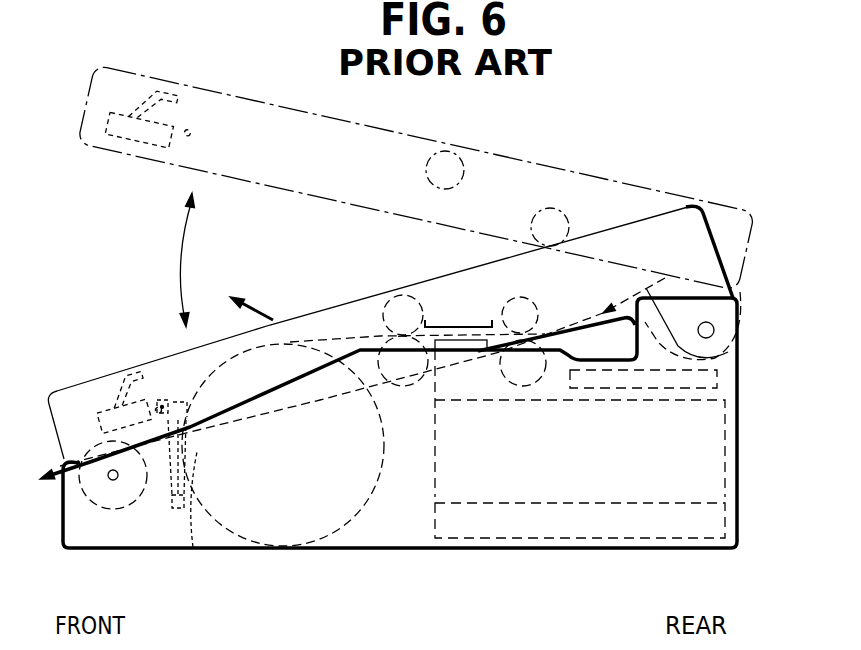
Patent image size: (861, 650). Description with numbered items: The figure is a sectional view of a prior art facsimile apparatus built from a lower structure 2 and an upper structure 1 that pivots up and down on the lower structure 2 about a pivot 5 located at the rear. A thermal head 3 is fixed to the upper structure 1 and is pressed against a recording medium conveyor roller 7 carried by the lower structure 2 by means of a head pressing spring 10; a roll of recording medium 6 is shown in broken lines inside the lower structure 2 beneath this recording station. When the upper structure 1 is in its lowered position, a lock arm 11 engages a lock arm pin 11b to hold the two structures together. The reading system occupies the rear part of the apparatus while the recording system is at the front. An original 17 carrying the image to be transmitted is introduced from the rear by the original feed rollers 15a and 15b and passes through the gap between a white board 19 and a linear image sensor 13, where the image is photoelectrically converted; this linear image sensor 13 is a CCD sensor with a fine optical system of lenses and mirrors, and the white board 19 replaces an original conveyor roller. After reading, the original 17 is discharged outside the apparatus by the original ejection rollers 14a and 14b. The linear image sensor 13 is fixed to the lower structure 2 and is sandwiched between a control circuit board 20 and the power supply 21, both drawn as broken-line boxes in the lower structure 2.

The upper structure 1 is at (641, 250).
The lower structure 2 is at (418, 532).
The thermal head 3 is at (85, 425).
The pivot 5 is at (716, 338).
The roll paper 6 is at (307, 536).
The recording medium conveyor roller 7 is at (130, 503).
The head pressing spring 10 is at (127, 376).
The lock arm 11 is at (193, 547).
The lock arm pin 11b is at (163, 403).
The linear image sensor 13 is at (527, 490).
The original ejection roller 14a is at (378, 388).
The original ejection roller 14b is at (385, 310).
The original feed roller 15a is at (524, 392).
The original feed roller 15b is at (514, 300).
The original 17 is at (272, 318).
The white board 19 is at (466, 325).
The control circuit board 20 is at (636, 533).
The power supply 21 is at (627, 390).